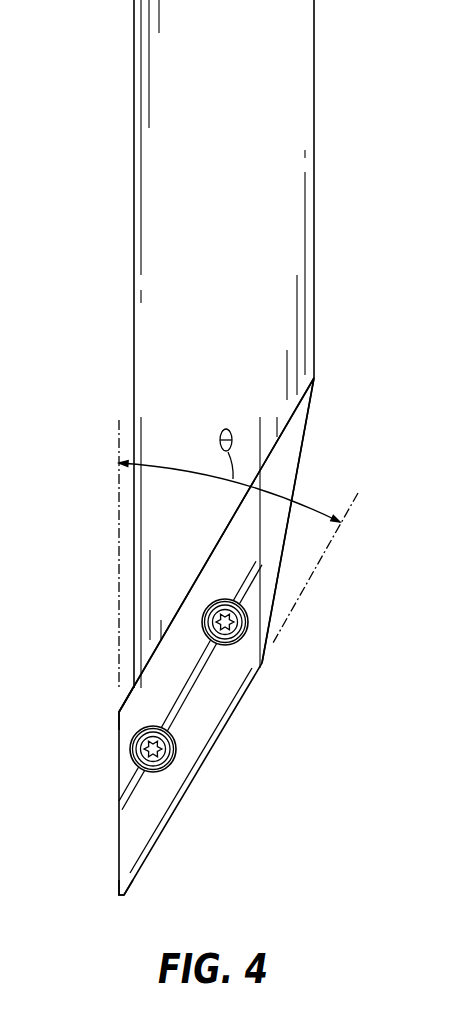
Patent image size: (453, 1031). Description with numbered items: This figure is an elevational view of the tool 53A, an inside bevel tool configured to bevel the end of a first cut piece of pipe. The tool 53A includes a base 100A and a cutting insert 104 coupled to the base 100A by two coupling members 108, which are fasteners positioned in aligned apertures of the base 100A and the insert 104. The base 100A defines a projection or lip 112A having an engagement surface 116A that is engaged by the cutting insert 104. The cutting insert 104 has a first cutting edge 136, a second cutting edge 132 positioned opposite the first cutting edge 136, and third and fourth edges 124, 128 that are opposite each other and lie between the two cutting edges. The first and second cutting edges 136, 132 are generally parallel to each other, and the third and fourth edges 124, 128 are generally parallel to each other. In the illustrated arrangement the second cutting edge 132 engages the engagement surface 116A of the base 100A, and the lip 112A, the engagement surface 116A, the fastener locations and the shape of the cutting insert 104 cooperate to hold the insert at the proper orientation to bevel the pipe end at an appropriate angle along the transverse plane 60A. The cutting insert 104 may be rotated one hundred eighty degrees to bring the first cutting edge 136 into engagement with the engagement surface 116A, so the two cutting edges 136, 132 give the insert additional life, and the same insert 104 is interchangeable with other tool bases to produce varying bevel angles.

The base 100A is at (181, 55).
The tool 53A is at (90, 186).
The lip 112A is at (292, 458).
The engagement surface 116A is at (290, 458).
The fourth edge 128 is at (261, 540).
The transverse plane 60A is at (297, 598).
The second cutting edge 132 is at (120, 708).
The coupling members 108 is at (131, 749).
The cutting insert 104 is at (140, 817).
The first cutting edge 136 is at (187, 795).
The third edge 124 is at (118, 882).